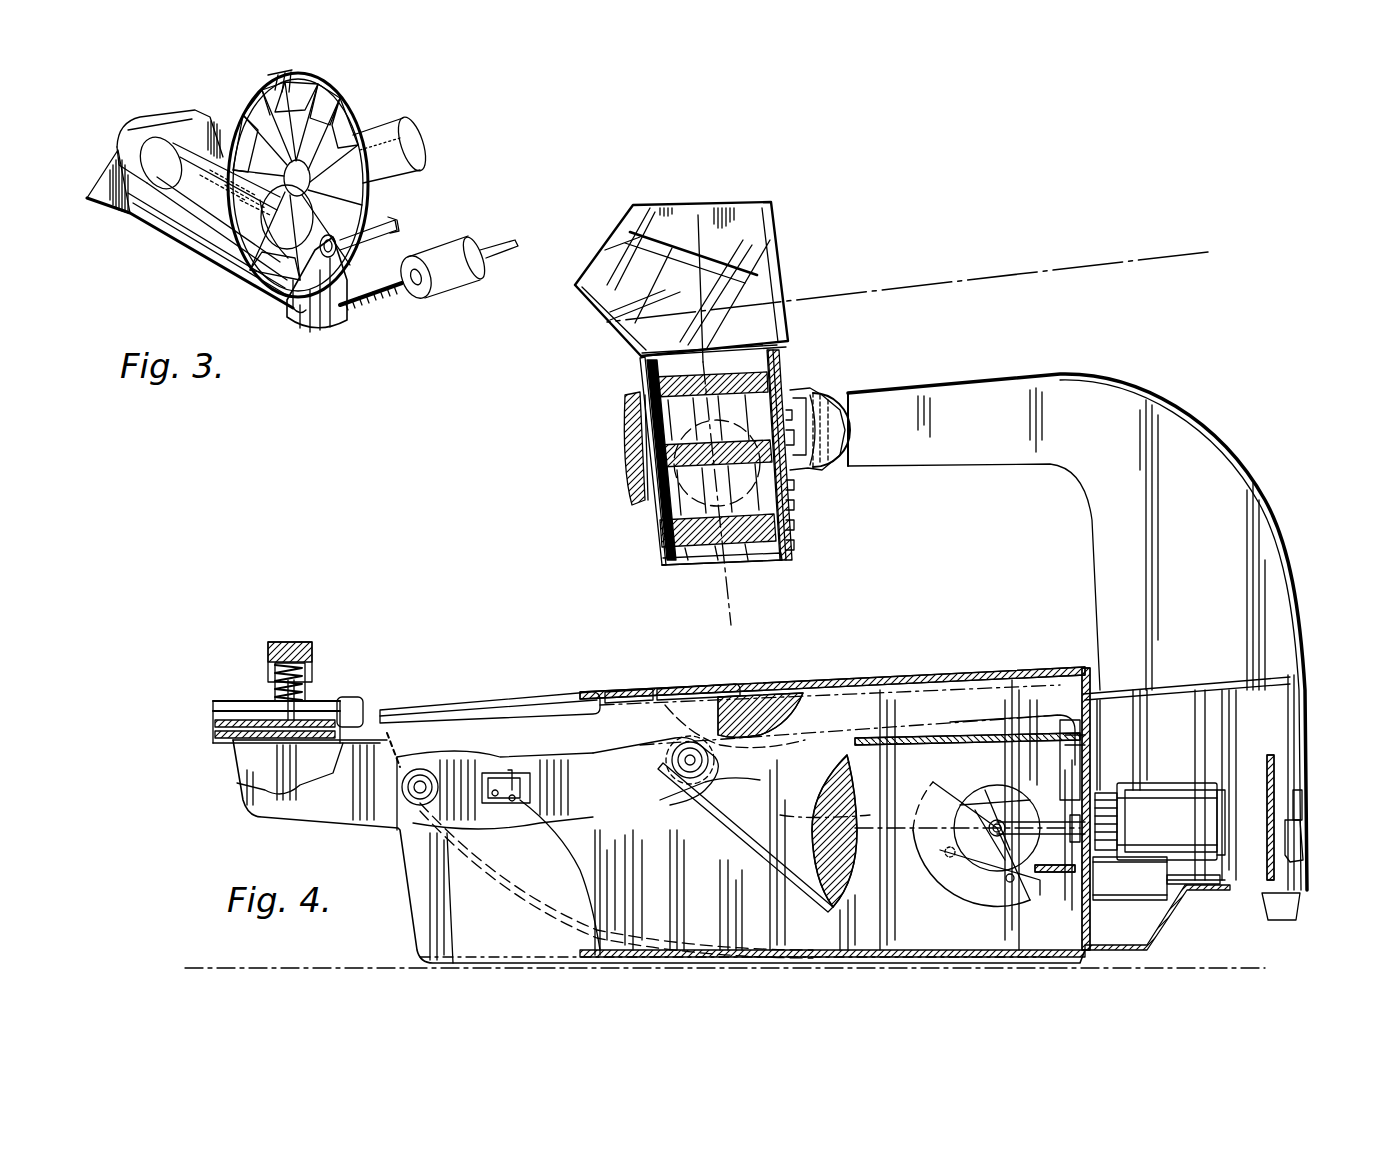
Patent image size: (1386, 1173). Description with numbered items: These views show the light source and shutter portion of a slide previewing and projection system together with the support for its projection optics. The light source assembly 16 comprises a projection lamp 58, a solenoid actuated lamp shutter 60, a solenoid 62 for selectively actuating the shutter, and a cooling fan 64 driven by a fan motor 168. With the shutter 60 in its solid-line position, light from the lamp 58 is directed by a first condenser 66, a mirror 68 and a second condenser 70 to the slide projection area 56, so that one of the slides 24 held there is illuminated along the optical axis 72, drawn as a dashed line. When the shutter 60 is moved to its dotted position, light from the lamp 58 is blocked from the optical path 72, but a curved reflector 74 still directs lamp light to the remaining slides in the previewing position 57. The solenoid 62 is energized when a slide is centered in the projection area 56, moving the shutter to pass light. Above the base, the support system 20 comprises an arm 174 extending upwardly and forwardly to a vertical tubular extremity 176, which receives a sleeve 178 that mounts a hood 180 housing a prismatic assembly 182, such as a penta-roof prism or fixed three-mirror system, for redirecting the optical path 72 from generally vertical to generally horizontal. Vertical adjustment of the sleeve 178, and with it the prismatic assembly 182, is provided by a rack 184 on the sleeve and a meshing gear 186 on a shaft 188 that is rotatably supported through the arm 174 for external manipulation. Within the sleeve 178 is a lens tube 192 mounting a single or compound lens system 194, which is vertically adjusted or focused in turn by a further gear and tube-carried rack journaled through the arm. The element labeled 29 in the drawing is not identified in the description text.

In FIG. 3, the light source assembly 16 is at (168, 260).
In FIG. 3, the projection lamp 58 is at (130, 222).
In FIG. 4, the projection lamp 58 is at (982, 820).
In FIG. 3, the lamp shutter 60 is at (292, 303).
In FIG. 4, the lamp shutter 60 is at (953, 878).
In FIG. 3, the solenoid 62 is at (430, 292).
In FIG. 4, the solenoid 62 is at (1155, 876).
In FIG. 3, the cooling fan 64 is at (305, 125).
In FIG. 4, the cooling fan 64 is at (1093, 737).
In FIG. 4, the support system 20 is at (1204, 407).
In FIG. 4, the slides 24 is at (800, 690).
In FIG. 4, the base 29 is at (593, 940).
In FIG. 4, the slide projection area 56 is at (657, 689).
In FIG. 4, the slide previewing position 57 is at (497, 703).
In FIG. 4, the condenser 66 is at (815, 793).
In FIG. 4, the mirror 68 is at (764, 839).
In FIG. 4, the condenser 70 is at (765, 723).
In FIG. 4, the optical axis 72 is at (858, 291).
In FIG. 4, the curved reflector 74 is at (627, 928).
In FIG. 4, the fan motor 168 is at (1160, 821).
In FIG. 4, the arm 174 is at (1230, 582).
In FIG. 4, the tubular extremity 176 is at (626, 432).
In FIG. 4, the sleeve 178 is at (636, 373).
In FIG. 4, the hood 180 is at (703, 200).
In FIG. 4, the prismatic assembly 182 is at (600, 307).
In FIG. 4, the rack 184 is at (785, 356).
In FIG. 4, the gear 186 is at (805, 395).
In FIG. 4, the shaft 188 is at (818, 471).
In FIG. 4, the lens tube 192 is at (785, 553).
In FIG. 4, the lens system 194 is at (684, 572).